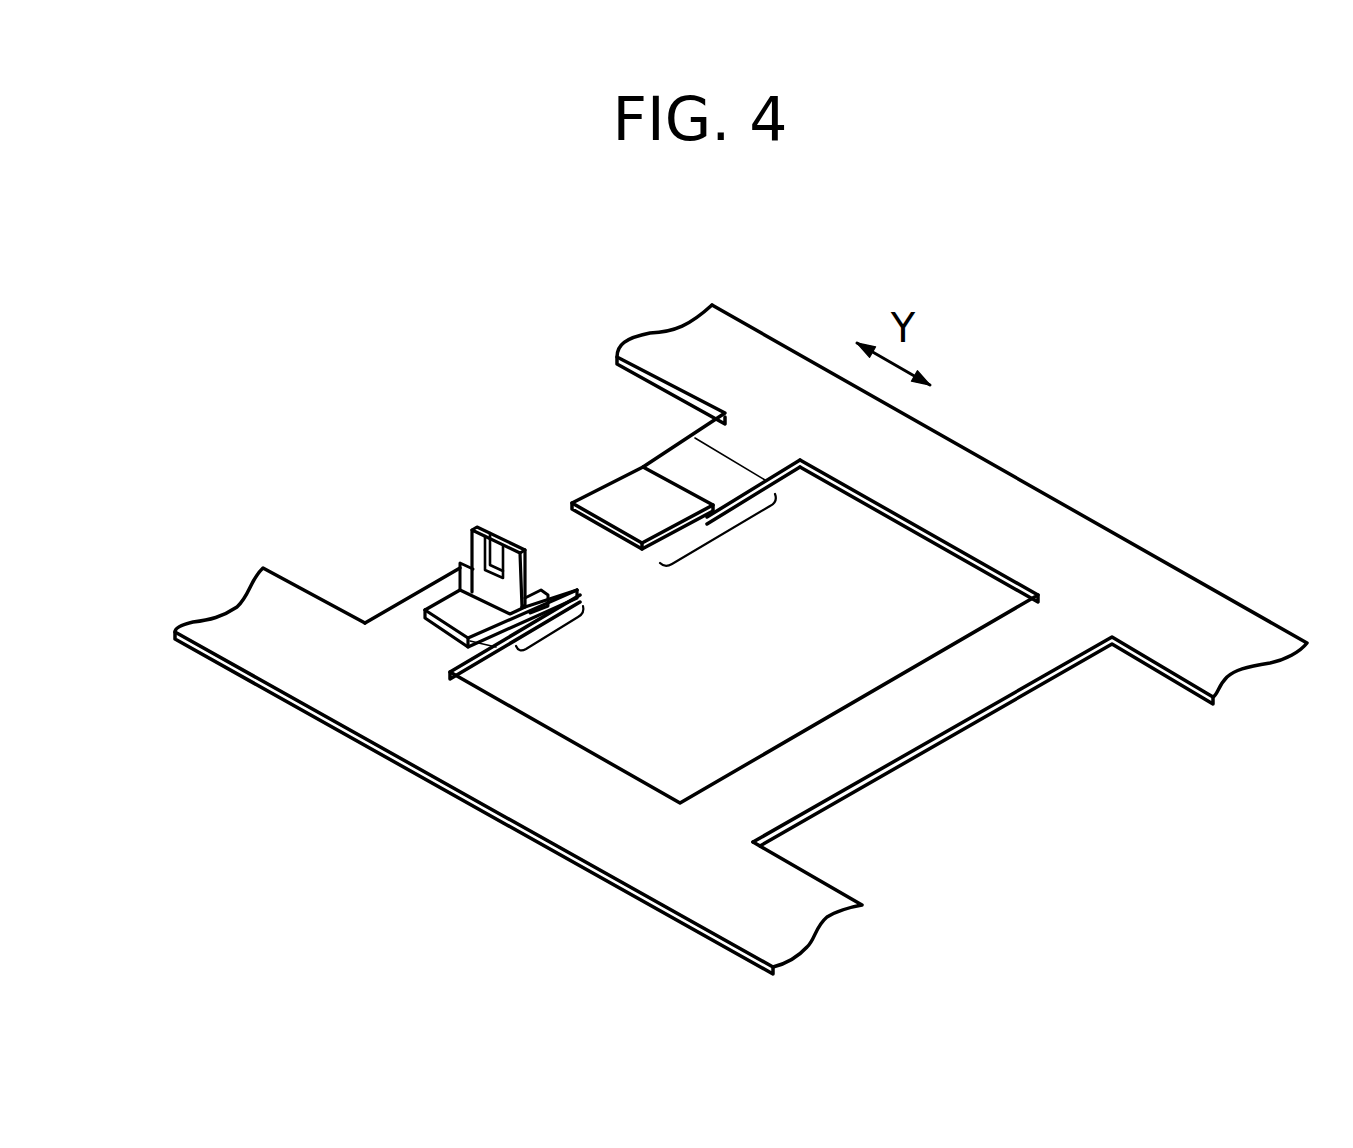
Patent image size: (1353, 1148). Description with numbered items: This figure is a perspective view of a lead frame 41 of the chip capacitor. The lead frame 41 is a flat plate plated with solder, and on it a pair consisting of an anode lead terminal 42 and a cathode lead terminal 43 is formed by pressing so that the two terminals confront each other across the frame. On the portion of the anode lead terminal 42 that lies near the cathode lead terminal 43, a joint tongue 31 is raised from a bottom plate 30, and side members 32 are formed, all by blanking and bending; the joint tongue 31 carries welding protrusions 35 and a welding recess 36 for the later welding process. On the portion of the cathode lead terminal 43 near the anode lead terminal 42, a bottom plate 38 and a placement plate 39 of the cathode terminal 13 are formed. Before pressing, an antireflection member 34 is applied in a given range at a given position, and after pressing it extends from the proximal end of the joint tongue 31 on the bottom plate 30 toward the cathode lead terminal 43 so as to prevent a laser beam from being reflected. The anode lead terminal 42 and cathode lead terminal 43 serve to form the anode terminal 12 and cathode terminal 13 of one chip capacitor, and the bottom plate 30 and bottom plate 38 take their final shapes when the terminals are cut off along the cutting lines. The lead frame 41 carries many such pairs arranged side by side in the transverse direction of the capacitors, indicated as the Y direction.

The anode terminal 12 is at (552, 640).
The cathode terminal 13 is at (718, 535).
The bottom plate 30 is at (542, 544).
The joint tongue 31 is at (468, 548).
The side members 32 is at (437, 590).
The antireflection member 34 is at (550, 590).
The welding protrusions 35 is at (470, 547).
The welding recess 36 is at (488, 543).
The bottom plate 38 is at (667, 462).
The placement plate 39 is at (618, 462).
The lead frame 41 is at (808, 332).
The anode lead terminal 42 is at (382, 613).
The cathode lead terminal 43 is at (615, 458).